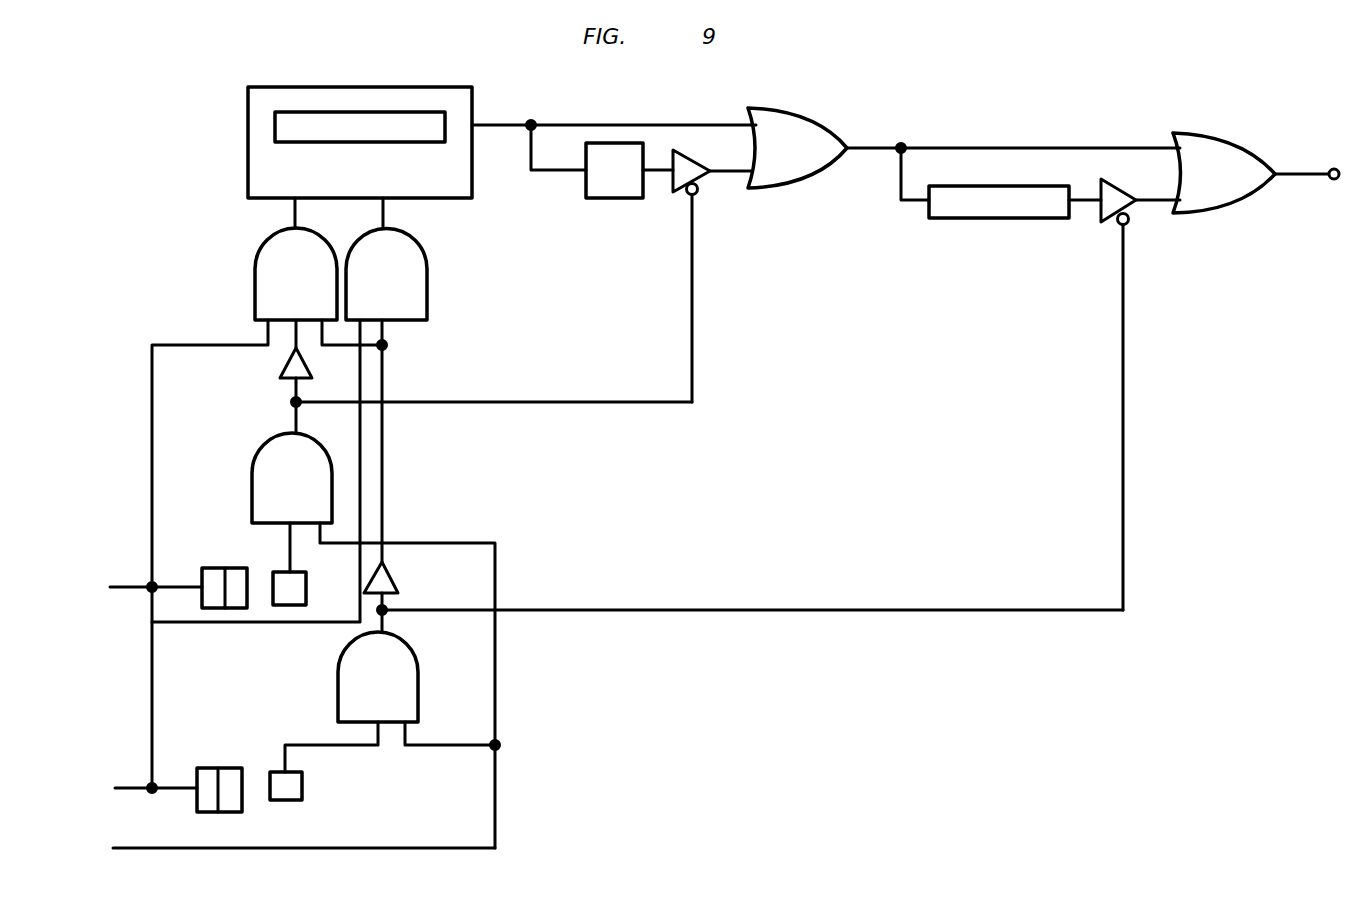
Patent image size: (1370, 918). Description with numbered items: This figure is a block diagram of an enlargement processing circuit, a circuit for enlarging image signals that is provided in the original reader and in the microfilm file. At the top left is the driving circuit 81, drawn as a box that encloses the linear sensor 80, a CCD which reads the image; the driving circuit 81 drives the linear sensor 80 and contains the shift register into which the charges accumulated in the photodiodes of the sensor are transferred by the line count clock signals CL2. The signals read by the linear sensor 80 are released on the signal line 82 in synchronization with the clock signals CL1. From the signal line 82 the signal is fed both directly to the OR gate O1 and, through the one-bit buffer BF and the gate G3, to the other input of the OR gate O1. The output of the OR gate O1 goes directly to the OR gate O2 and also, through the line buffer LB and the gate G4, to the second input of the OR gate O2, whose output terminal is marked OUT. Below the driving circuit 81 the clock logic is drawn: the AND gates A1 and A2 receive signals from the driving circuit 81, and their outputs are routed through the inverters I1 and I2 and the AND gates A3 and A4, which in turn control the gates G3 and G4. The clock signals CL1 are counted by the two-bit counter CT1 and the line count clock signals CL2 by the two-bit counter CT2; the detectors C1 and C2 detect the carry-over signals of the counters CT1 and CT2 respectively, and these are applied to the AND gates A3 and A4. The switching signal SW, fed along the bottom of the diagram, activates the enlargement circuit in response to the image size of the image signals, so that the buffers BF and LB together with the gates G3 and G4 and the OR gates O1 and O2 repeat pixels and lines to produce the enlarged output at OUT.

The linear sensor 80 is at (447, 118).
The driving circuit 81 is at (247, 183).
The signal line 82 is at (532, 125).
The AND gate A1 is at (255, 292).
The AND gate A2 is at (428, 288).
The AND gate A3 is at (252, 478).
The AND gate A4 is at (418, 693).
The inverter I1 is at (280, 362).
The inverter I2 is at (398, 577).
The 1-bit buffer BF is at (608, 198).
The gate G3 is at (700, 176).
The gate G4 is at (1128, 208).
The OR gate O1 is at (815, 182).
The OR gate O2 is at (1218, 214).
The line buffer LB is at (985, 218).
The output OUT is at (1310, 159).
The 2-bit counter CT1 is at (203, 570).
The 2-bit counter CT2 is at (227, 814).
The detector C1 is at (273, 580).
The detector C2 is at (285, 800).
The clock signals CL1 is at (131, 588).
The line count clock signals CL2 is at (129, 789).
The switching signal SW is at (281, 847).